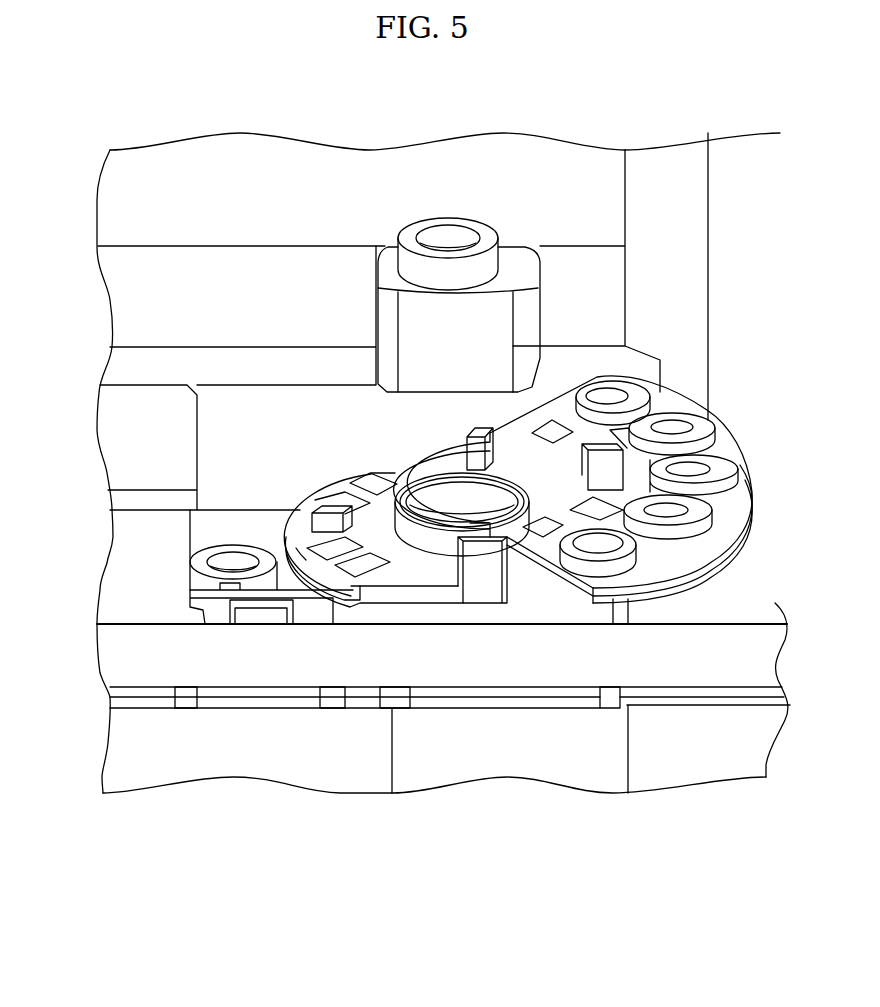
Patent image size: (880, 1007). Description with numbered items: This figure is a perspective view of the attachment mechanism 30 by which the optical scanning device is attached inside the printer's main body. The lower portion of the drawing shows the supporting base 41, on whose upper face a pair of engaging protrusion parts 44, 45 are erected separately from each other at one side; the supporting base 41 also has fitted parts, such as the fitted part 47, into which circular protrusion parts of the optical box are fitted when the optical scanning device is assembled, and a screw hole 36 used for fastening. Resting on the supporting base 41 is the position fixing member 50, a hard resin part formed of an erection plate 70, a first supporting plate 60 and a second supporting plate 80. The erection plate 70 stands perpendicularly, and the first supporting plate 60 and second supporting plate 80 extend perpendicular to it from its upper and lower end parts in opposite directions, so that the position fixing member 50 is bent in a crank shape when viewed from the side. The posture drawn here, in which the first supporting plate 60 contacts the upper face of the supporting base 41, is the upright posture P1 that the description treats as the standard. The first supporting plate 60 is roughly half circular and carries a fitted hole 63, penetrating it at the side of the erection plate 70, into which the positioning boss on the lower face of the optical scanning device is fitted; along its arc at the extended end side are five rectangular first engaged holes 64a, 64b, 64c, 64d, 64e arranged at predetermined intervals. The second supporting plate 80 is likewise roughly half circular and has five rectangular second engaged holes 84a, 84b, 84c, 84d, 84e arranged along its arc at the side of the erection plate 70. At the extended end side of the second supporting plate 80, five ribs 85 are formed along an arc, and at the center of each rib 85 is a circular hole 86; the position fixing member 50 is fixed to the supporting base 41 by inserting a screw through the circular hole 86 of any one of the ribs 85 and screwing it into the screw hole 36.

The attachment mechanism 30 is at (412, 878).
The screw hole 36 is at (213, 563).
The supporting base 41 is at (377, 633).
The engaging protrusion part 44 is at (315, 517).
The engaging protrusion part 45 is at (612, 470).
The fitted part 47 is at (445, 233).
The position fixing member 50 is at (552, 836).
The first supporting plate 60 is at (274, 466).
The fitted hole 63 is at (433, 488).
The first engaged hole 64a is at (357, 480).
The first engaged hole 64b is at (340, 498).
The first engaged hole 64c is at (322, 548).
The first engaged hole 64d is at (318, 552).
The first engaged hole 64e is at (338, 560).
The erection plate 70 is at (482, 560).
The second supporting plate 80 is at (621, 573).
The second engaged hole 84a is at (630, 546).
The second engaged hole 84b is at (660, 522).
The second engaged hole 84c is at (612, 505).
The second engaged hole 84d is at (655, 462).
The second engaged hole 84e is at (575, 433).
The rib 85 is at (640, 393).
The circular hole 86 is at (612, 393).
The upright posture P1 is at (375, 434).